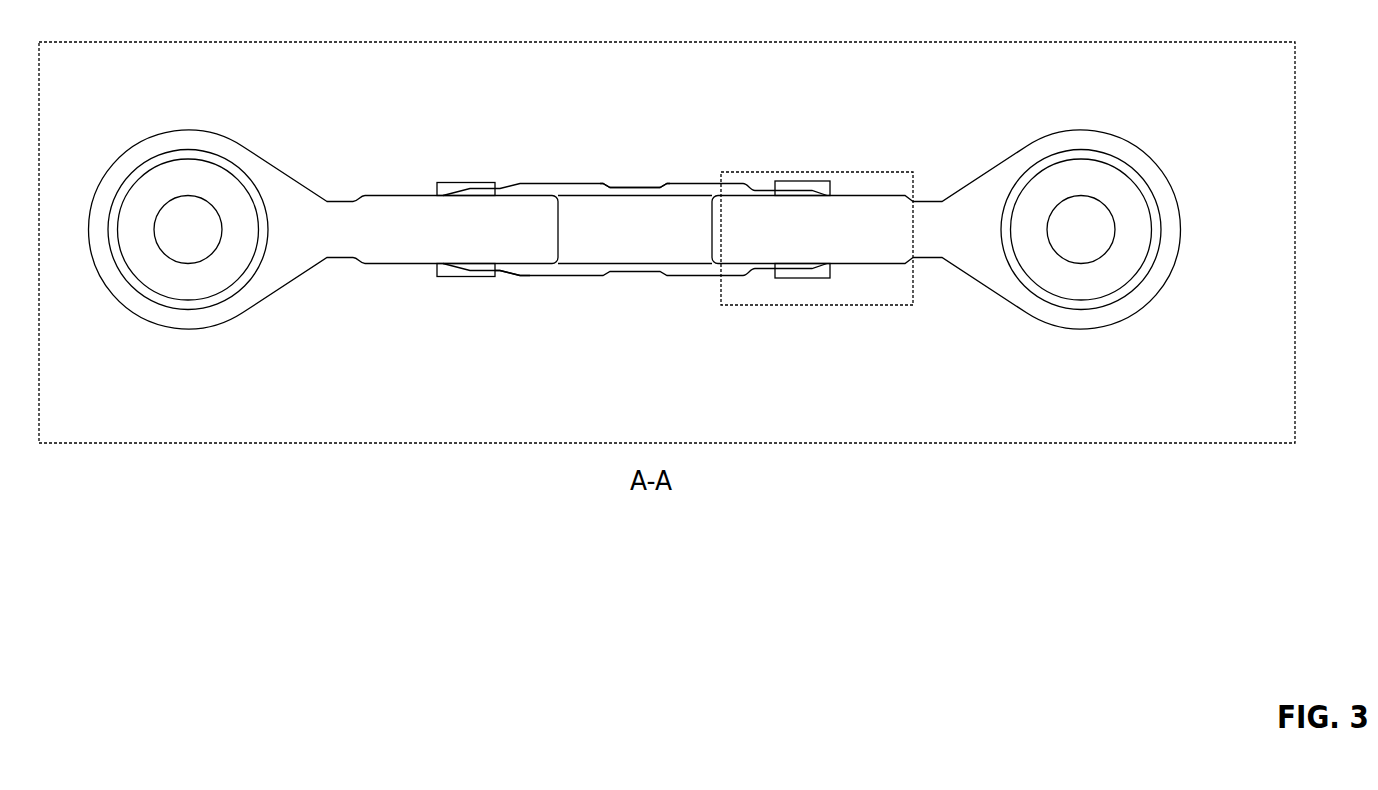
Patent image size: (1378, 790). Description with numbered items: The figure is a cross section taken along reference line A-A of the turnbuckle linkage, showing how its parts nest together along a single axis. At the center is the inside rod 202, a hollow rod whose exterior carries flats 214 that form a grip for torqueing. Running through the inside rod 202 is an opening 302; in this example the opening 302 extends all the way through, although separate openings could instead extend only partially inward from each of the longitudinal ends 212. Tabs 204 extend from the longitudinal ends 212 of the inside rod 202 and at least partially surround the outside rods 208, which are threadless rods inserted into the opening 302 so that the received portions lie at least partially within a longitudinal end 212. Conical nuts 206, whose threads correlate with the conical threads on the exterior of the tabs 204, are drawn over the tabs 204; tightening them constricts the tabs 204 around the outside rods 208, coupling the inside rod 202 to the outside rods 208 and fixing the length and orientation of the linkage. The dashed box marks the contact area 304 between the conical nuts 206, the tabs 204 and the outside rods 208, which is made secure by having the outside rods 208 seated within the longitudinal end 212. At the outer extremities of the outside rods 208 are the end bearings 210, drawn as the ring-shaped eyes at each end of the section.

The inside rod 202 is at (695, 181).
The tabs 204 is at (472, 183).
The conical nuts 206 is at (805, 181).
The outside rods 208 is at (378, 192).
The end bearings 210 is at (1117, 137).
The longitudinal ends 212 is at (518, 277).
The flats 214 is at (610, 186).
The opening 302 is at (662, 249).
The contact area 304 is at (902, 170).